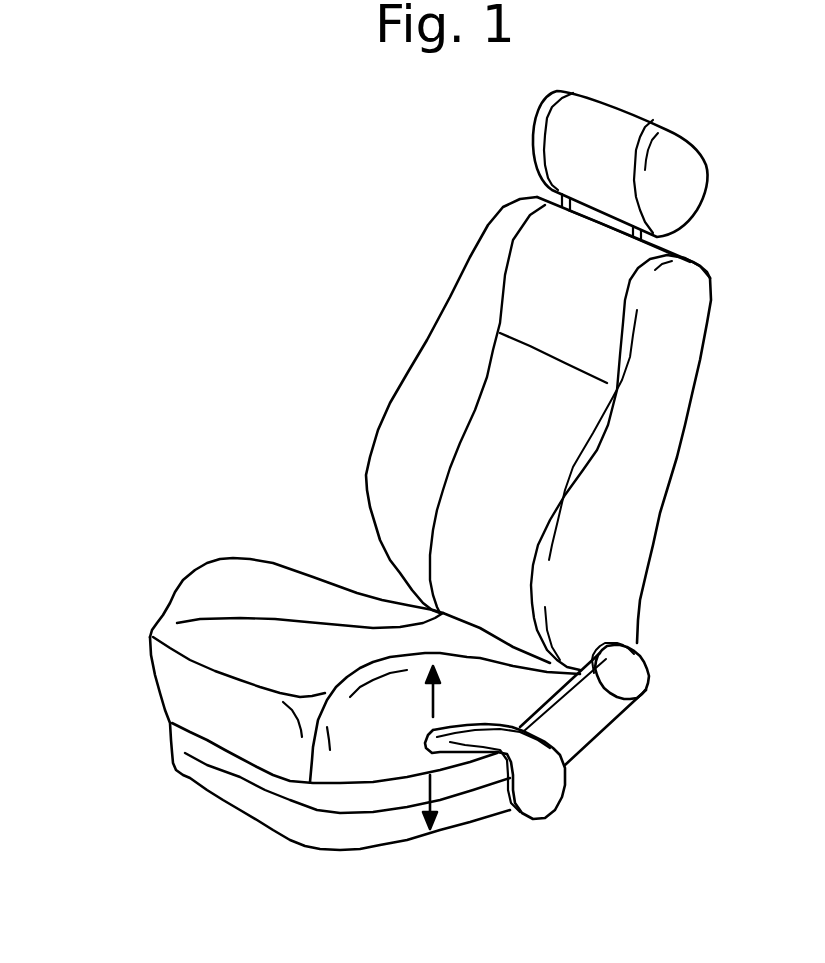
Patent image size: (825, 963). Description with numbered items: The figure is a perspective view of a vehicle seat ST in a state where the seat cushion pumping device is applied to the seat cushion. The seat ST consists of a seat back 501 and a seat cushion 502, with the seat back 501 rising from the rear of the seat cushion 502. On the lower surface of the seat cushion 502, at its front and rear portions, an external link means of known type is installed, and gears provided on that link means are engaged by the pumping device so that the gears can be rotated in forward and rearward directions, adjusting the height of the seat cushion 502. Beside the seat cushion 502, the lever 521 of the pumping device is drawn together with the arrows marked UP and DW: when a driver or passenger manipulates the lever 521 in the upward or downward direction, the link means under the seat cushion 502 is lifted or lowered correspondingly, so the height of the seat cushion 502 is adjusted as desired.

The seat ST is at (430, 501).
The seat back 501 is at (574, 380).
The seat cushion 502 is at (329, 695).
The lever 521 is at (537, 777).